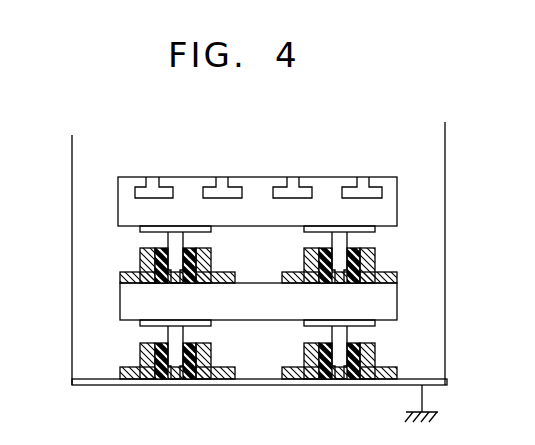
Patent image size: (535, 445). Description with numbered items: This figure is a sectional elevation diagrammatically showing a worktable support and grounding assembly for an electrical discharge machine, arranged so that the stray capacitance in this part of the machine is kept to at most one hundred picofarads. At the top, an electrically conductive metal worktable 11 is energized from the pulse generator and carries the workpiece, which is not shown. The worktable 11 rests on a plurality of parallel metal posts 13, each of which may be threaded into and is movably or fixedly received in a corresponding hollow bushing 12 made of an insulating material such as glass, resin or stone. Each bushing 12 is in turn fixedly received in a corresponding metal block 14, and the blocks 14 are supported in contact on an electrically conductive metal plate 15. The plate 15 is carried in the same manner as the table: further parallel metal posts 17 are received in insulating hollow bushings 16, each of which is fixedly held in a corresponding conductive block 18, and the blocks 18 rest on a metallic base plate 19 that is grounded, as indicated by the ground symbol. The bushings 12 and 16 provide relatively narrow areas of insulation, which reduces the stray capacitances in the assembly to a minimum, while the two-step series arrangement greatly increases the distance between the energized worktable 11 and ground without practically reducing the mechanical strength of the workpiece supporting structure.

The worktable 11 is at (387, 177).
The hollow bushing 12 is at (163, 245).
The parallel post 13 is at (183, 237).
The block 14 is at (120, 279).
The plate 15 is at (397, 304).
The hollow bushing 16 is at (167, 345).
The parallel post 17 is at (183, 337).
The block 18 is at (128, 365).
The base plate 19 is at (262, 385).